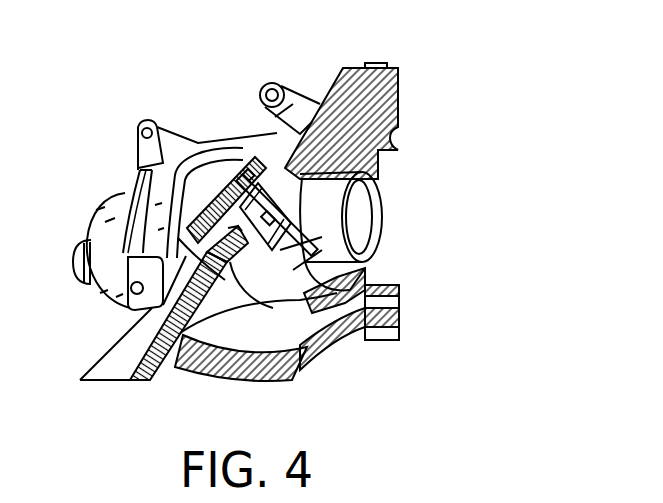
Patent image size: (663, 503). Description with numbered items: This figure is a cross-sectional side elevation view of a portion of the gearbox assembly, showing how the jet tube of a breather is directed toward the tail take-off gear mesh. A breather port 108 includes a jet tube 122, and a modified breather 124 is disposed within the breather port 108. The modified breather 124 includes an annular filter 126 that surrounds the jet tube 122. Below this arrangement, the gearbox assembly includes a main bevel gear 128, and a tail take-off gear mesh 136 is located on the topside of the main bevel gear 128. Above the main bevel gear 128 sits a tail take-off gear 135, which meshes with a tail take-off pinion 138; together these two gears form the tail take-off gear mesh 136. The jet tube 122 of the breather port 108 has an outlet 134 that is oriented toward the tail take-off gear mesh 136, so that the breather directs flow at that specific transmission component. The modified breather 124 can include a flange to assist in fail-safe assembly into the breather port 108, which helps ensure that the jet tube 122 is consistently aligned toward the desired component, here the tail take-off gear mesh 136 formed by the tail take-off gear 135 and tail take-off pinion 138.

The breather port 108 is at (281, 172).
The jet tube 122 is at (313, 226).
The modified breather 124 is at (243, 168).
The annular filter 126 is at (240, 173).
The main bevel gear 128 is at (303, 330).
The outlet 134 is at (300, 250).
The tail take-off gear 135 is at (342, 270).
The tail take-off gear mesh 136 is at (370, 300).
The tail take-off pinion 138 is at (320, 190).